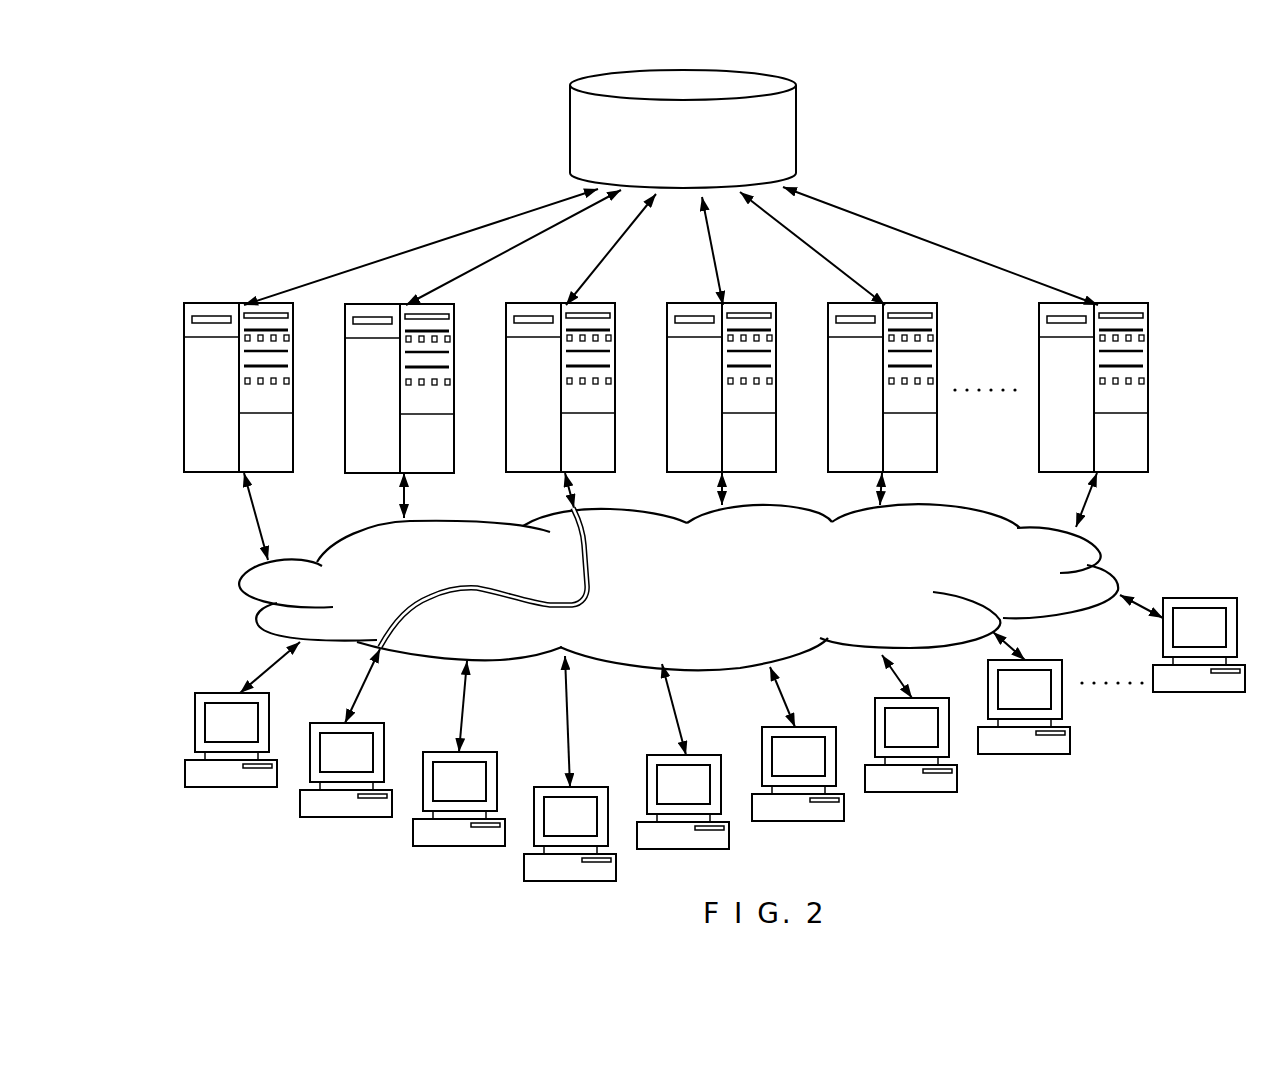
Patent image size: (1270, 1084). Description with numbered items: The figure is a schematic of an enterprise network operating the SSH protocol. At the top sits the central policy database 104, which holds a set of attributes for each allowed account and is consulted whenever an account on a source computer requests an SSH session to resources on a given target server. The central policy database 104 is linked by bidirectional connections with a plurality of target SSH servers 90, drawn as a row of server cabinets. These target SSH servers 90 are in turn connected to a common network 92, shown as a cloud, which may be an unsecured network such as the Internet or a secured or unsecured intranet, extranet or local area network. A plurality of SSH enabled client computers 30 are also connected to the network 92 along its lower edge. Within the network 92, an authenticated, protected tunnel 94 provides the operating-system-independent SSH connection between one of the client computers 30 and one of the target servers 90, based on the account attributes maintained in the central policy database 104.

The central policy database 104 is at (707, 153).
The target SSH servers 90 is at (670, 372).
The common network 92 is at (783, 585).
The authenticated, protected tunnel 94 is at (477, 581).
The SSH enabled client computers 30 is at (715, 754).